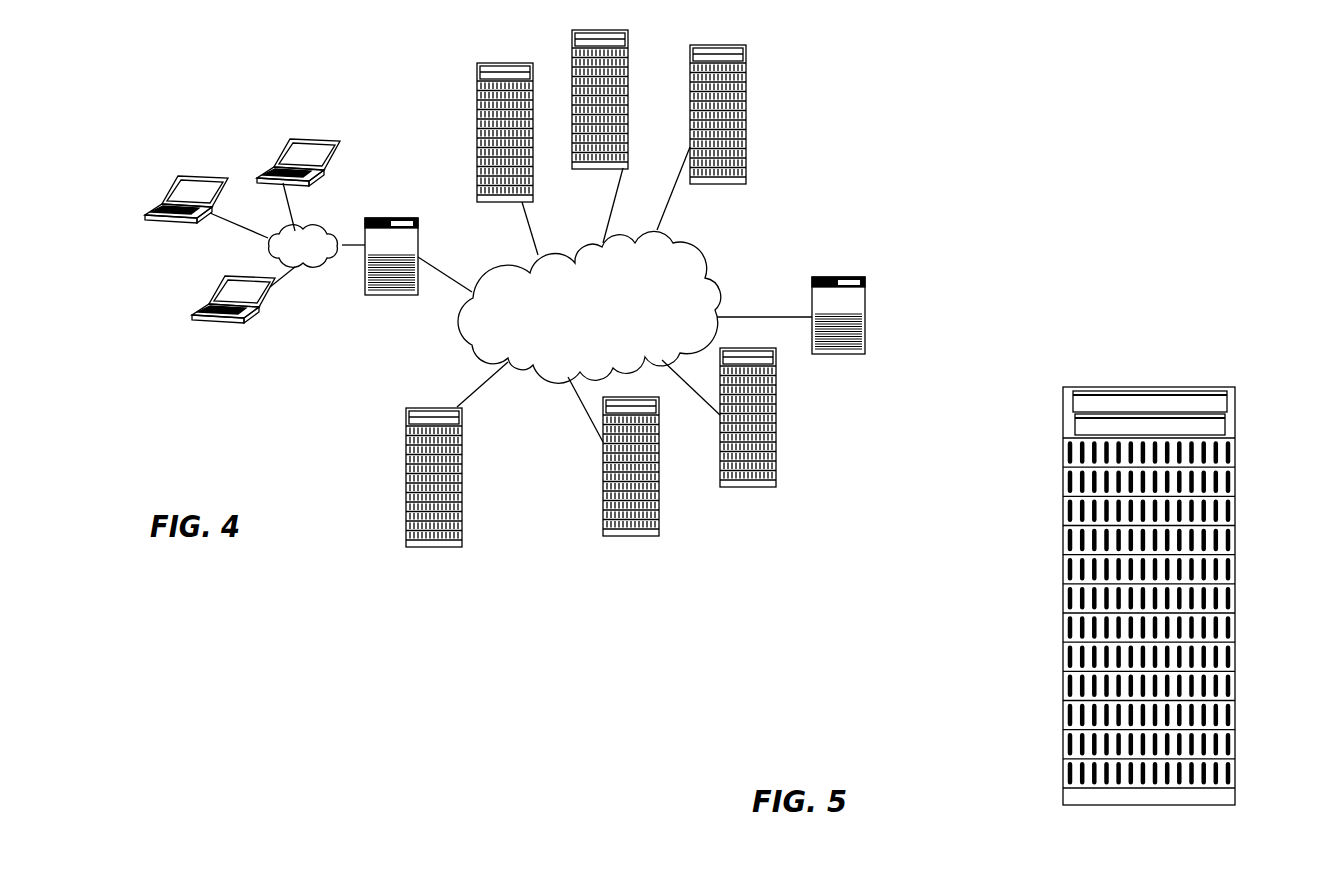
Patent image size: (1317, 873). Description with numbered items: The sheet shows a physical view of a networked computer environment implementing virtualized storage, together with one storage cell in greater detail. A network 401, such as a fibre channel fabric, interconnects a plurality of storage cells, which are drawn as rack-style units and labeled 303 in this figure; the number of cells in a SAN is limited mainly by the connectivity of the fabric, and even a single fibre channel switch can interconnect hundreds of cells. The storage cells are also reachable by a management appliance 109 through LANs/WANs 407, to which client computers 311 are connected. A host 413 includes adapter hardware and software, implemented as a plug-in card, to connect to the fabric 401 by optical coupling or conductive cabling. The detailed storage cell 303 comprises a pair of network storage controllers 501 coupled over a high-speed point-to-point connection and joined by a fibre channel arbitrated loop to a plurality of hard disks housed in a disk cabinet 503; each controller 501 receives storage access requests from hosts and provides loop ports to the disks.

In FIG. 4, the management appliance 109 is at (400, 221).
In FIG. 4, the storage rack / server tower 303 is at (477, 78).
In FIG. 5, the storage rack / server tower 303 is at (1143, 519).
In FIG. 4, the client computer (laptop) 311 is at (145, 215).
In FIG. 4, the network 401 is at (680, 242).
In FIG. 4, the LANs/WANs 407 is at (325, 263).
In FIG. 4, the host 413 is at (867, 320).
In FIG. 5, the network storage controller 501 is at (1065, 400).
In FIG. 5, the disk cabinet 503 is at (1063, 650).